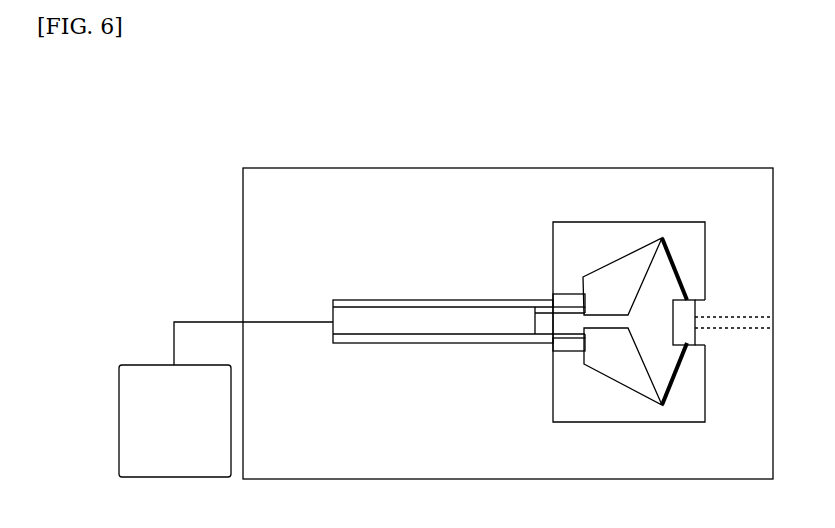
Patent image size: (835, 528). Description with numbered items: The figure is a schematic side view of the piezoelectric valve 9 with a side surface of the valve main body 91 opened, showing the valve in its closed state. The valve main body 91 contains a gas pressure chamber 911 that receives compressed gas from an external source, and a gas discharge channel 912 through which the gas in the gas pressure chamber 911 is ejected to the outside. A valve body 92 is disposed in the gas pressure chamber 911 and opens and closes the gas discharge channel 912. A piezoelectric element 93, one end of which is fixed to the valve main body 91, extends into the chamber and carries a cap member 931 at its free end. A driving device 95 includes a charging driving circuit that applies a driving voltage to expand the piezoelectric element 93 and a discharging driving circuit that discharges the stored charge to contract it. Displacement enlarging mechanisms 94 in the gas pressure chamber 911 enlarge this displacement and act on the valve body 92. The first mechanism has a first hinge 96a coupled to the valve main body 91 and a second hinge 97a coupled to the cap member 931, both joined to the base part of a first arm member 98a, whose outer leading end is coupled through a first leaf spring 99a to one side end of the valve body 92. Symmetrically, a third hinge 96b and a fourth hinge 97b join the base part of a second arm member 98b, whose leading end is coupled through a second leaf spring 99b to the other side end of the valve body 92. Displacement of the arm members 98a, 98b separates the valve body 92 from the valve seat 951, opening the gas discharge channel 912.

The piezoelectric valve 9 is at (405, 150).
The valve main body 91 is at (270, 207).
The gas pressure chamber 911 is at (560, 228).
The gas discharge channel 912 is at (752, 318).
The valve body 92 is at (697, 335).
The piezoelectric element 93 is at (388, 327).
The cap member 931 is at (535, 325).
The displacement enlarging mechanisms 94 is at (636, 328).
The driving device 95 is at (155, 372).
The valve seat 951 is at (697, 300).
The first hinge 96a is at (565, 290).
The third hinge 96b is at (558, 355).
The second hinge 97a is at (571, 296).
The fourth hinge 97b is at (572, 352).
The first arm member 98a is at (627, 258).
The second arm member 98b is at (632, 382).
The first leaf spring 99a is at (680, 262).
The second leaf spring 99b is at (678, 372).